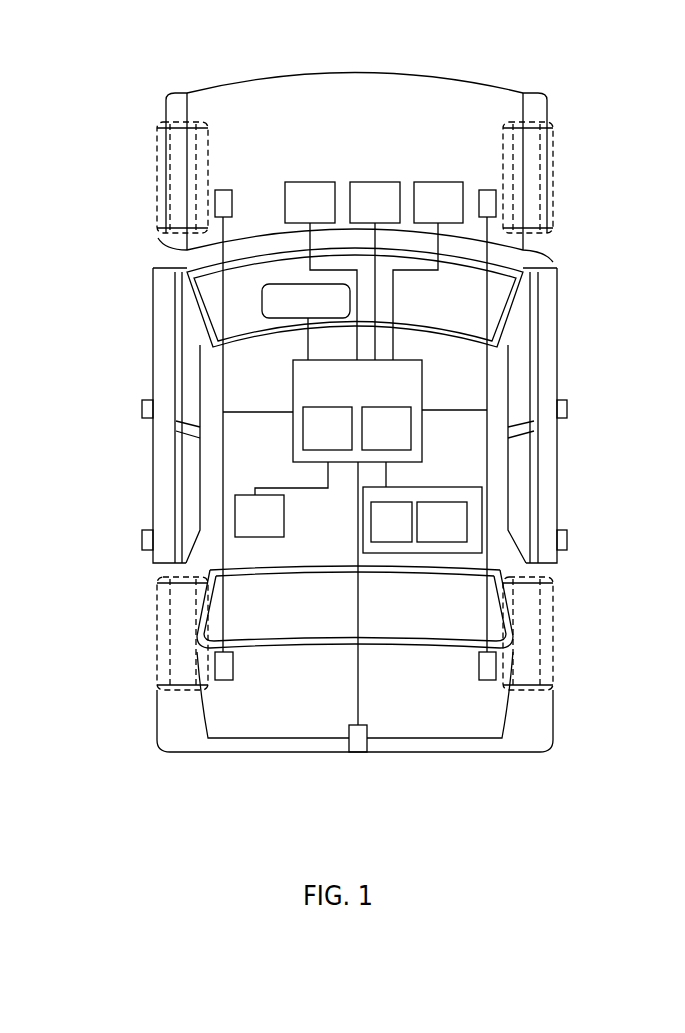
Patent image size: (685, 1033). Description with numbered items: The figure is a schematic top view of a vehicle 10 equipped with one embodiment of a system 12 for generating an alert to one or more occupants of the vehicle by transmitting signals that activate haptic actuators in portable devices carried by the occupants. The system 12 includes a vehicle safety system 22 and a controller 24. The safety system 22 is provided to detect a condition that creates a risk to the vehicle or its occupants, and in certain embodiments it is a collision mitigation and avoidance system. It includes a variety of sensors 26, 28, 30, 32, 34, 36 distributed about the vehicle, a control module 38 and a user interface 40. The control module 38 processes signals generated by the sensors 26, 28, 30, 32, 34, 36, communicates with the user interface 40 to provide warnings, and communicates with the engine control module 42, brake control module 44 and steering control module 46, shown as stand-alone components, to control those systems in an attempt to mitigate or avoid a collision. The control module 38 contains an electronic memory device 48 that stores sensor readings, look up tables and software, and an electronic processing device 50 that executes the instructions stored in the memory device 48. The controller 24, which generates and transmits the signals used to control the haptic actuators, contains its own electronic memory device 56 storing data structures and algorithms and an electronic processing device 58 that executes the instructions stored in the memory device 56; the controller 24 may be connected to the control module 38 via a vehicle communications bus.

The vehicle 10 is at (620, 166).
The system 12 is at (68, 408).
The vehicle safety system 22 is at (395, 389).
The controller 24 is at (460, 495).
The sensor 26 is at (155, 249).
The sensor 28 is at (545, 262).
The sensor 30 is at (222, 686).
The sensor 32 is at (489, 686).
The sensor 34 is at (281, 499).
The sensor 36 is at (349, 731).
The control module 38 is at (357, 411).
The user interface 40 is at (278, 318).
The engine control module 42 is at (321, 271).
The brake control module 44 is at (375, 271).
The steering control module 46 is at (428, 271).
The electronic memory device 48 is at (327, 428).
The electronic processing device 50 is at (386, 428).
The electronic memory device 56 is at (391, 522).
The electronic processing device 58 is at (442, 522).